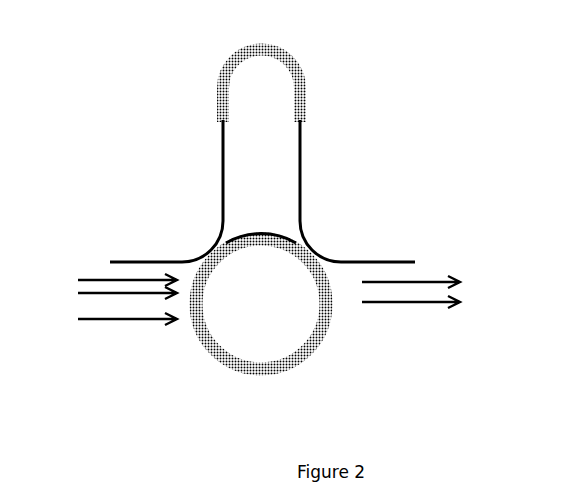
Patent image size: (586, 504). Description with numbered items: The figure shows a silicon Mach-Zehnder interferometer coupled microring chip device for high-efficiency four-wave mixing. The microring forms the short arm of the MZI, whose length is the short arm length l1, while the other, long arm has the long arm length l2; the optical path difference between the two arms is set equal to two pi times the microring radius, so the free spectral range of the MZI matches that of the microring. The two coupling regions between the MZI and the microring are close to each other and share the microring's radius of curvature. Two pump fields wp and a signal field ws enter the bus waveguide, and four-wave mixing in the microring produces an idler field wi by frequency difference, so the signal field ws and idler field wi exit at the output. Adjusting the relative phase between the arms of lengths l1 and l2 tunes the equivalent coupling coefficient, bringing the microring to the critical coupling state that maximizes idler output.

The short arm length l1 is at (268, 233).
The long arm length l2 is at (290, 55).
The pump field wp is at (108, 279).
The signal field ws is at (250, 293).
The idler field wi is at (411, 317).